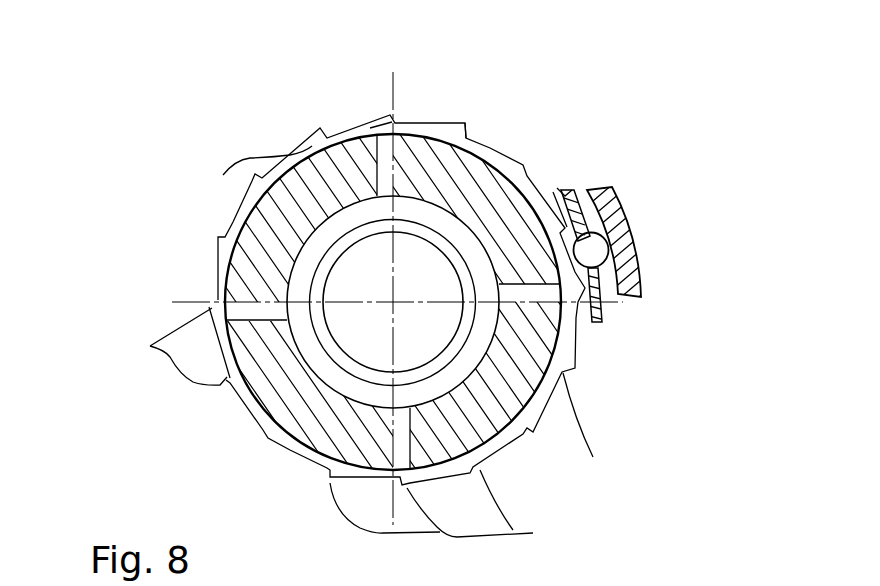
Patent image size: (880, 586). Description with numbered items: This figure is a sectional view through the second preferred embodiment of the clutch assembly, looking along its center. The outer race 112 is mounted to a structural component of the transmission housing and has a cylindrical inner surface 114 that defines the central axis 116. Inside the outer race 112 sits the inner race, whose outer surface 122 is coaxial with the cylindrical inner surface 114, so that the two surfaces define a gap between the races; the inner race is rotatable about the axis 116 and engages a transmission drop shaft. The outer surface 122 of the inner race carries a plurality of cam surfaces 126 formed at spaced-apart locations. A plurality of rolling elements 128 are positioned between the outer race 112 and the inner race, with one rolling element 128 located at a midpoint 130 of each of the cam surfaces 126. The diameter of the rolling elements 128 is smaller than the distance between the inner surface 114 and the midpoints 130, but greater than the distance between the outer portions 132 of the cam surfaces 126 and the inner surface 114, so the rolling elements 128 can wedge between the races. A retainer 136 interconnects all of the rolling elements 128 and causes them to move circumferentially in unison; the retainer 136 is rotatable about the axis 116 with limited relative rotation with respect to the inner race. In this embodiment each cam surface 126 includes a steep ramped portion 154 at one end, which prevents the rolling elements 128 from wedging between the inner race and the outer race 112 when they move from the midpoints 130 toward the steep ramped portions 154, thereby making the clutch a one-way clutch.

The outer race 112 is at (465, 173).
The cylindrical inner surface 114 is at (613, 304).
The central axis 116 is at (391, 305).
The outer surface 122 is at (231, 220).
The cam surfaces 126 is at (303, 145).
The rolling elements 128 is at (594, 250).
The midpoint 130 is at (218, 265).
The outer portions 132 is at (533, 432).
The retainer 136 is at (565, 190).
The steep ramped portion 154 is at (223, 175).